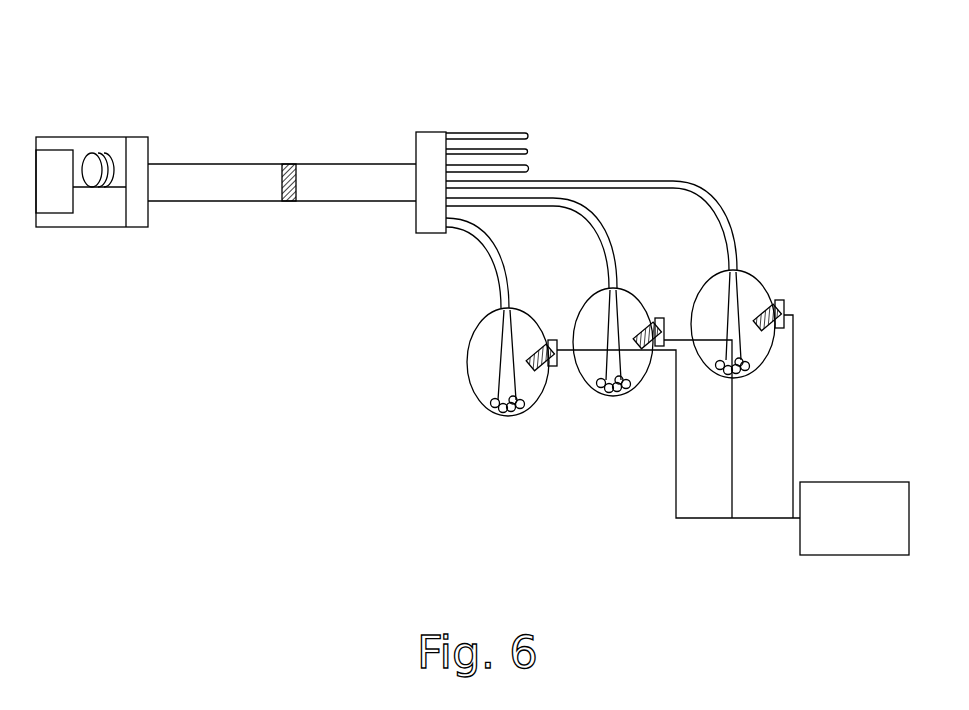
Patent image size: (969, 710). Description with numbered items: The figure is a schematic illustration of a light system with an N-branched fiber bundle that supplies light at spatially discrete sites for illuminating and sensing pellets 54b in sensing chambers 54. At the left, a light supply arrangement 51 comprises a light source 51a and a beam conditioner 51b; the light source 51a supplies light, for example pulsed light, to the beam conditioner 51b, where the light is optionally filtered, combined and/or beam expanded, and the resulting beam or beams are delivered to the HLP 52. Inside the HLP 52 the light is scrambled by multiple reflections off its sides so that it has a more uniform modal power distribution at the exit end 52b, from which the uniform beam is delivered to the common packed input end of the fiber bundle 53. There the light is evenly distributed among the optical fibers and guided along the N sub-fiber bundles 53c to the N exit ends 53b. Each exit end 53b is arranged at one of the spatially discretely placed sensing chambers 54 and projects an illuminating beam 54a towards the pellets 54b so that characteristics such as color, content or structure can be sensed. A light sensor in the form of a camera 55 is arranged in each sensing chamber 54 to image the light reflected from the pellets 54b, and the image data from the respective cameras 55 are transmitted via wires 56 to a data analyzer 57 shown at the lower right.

The light supply arrangement 51 is at (93, 115).
The light source 51a is at (53, 207).
The beam conditioner 51b is at (135, 215).
The HLP 52 is at (224, 140).
The exit end of the HLP 52b is at (288, 155).
The N-branched fiber bundle 53 is at (432, 126).
The exit ends 53b is at (744, 258).
The sub-fiber bundles 53c is at (597, 213).
The sensing chambers 54 is at (463, 342).
The illuminating beams 54a is at (495, 381).
The pellets 54b is at (497, 422).
The camera 55 is at (553, 374).
The wires 56 is at (727, 492).
The data analyzer 57 is at (854, 518).